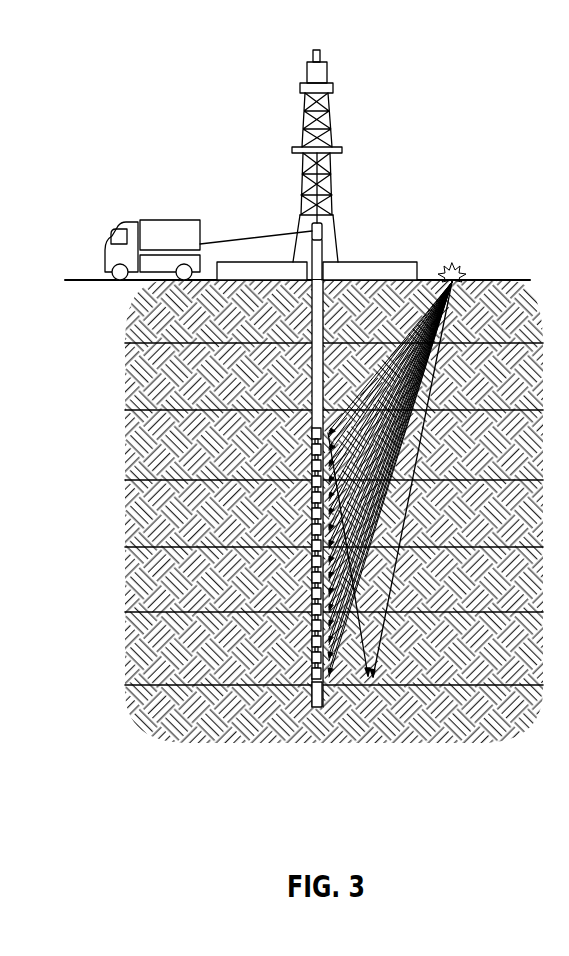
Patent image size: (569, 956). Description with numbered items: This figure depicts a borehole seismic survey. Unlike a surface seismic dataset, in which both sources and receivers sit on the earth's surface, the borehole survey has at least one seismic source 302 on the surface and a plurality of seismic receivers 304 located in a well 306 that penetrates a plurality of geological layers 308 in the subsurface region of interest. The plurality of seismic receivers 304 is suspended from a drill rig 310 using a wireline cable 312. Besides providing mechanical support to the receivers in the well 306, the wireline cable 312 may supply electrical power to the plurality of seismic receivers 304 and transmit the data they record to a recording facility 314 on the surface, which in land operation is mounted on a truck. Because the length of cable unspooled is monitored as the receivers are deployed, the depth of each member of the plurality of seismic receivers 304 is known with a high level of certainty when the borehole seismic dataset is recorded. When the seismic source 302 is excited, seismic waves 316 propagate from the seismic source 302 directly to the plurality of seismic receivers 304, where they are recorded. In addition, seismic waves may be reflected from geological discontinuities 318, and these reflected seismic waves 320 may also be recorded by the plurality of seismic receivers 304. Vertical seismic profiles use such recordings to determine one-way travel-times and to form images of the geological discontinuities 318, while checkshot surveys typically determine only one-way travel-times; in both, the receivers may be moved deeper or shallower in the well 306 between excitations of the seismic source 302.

The seismic source 302 is at (455, 263).
The plurality of seismic receivers 304 is at (310, 615).
The well 306 is at (317, 712).
The geological layers 308 is at (140, 585).
The drill rig 310 is at (332, 130).
The wireline cable 312 is at (322, 308).
The recording facility 314 is at (168, 220).
The seismic waves 316 is at (366, 418).
The geological discontinuities 318 is at (493, 690).
The reflected seismic waves 320 is at (360, 657).